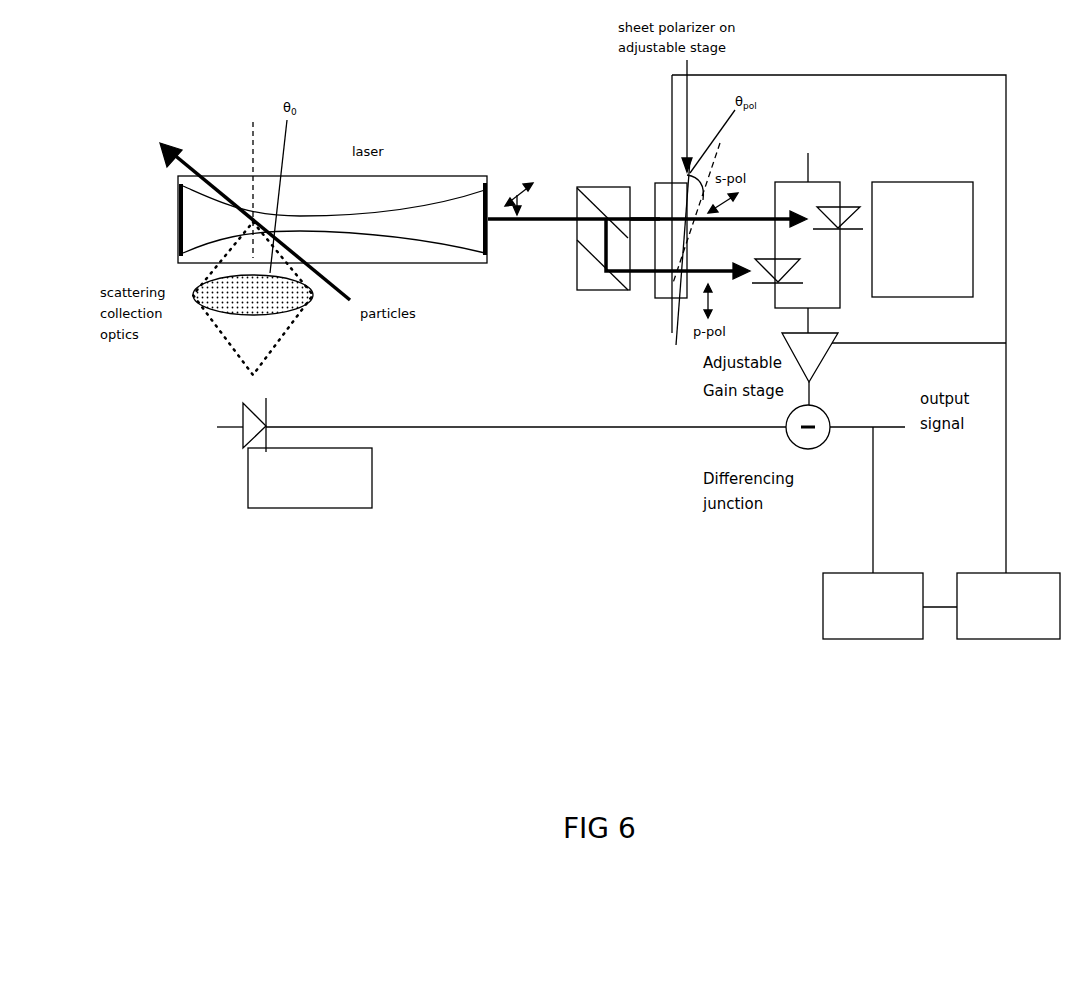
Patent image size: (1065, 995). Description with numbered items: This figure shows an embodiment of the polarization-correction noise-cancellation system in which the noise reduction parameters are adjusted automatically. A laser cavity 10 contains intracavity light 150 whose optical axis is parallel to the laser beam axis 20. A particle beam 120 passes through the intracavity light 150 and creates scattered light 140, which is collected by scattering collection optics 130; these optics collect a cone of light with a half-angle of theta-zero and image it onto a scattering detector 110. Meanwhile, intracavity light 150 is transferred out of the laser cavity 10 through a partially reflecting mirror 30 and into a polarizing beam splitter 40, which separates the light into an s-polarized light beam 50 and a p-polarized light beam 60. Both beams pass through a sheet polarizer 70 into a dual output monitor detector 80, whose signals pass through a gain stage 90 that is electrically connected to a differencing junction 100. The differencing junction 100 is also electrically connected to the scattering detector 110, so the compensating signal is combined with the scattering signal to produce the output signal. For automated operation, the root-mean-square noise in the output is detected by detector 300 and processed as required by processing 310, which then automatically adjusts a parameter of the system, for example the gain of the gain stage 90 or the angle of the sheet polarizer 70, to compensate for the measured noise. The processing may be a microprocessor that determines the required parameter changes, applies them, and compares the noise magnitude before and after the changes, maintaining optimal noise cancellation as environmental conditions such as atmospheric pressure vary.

The laser cavity 10 is at (437, 130).
The laser beam axis 20 is at (537, 210).
The partially reflecting mirror 30 is at (492, 238).
The polarizing beam splitter 40 is at (587, 183).
The s-polarized light beam 50 is at (638, 300).
The p-polarized light beam 60 is at (638, 300).
The sheet polarizer 70 is at (687, 298).
The dual output monitor detector 80 is at (974, 272).
The gain stage 90 is at (822, 362).
The differencing junction 100 is at (787, 440).
The scattering detector 110 is at (372, 485).
The particle beam 120 is at (192, 172).
The scattering collection optics 130 is at (308, 302).
The scattered light 140 is at (180, 257).
The intracavity light 150 is at (385, 225).
The RMS noise detector 300 is at (873, 639).
The processing 310 is at (1008, 639).